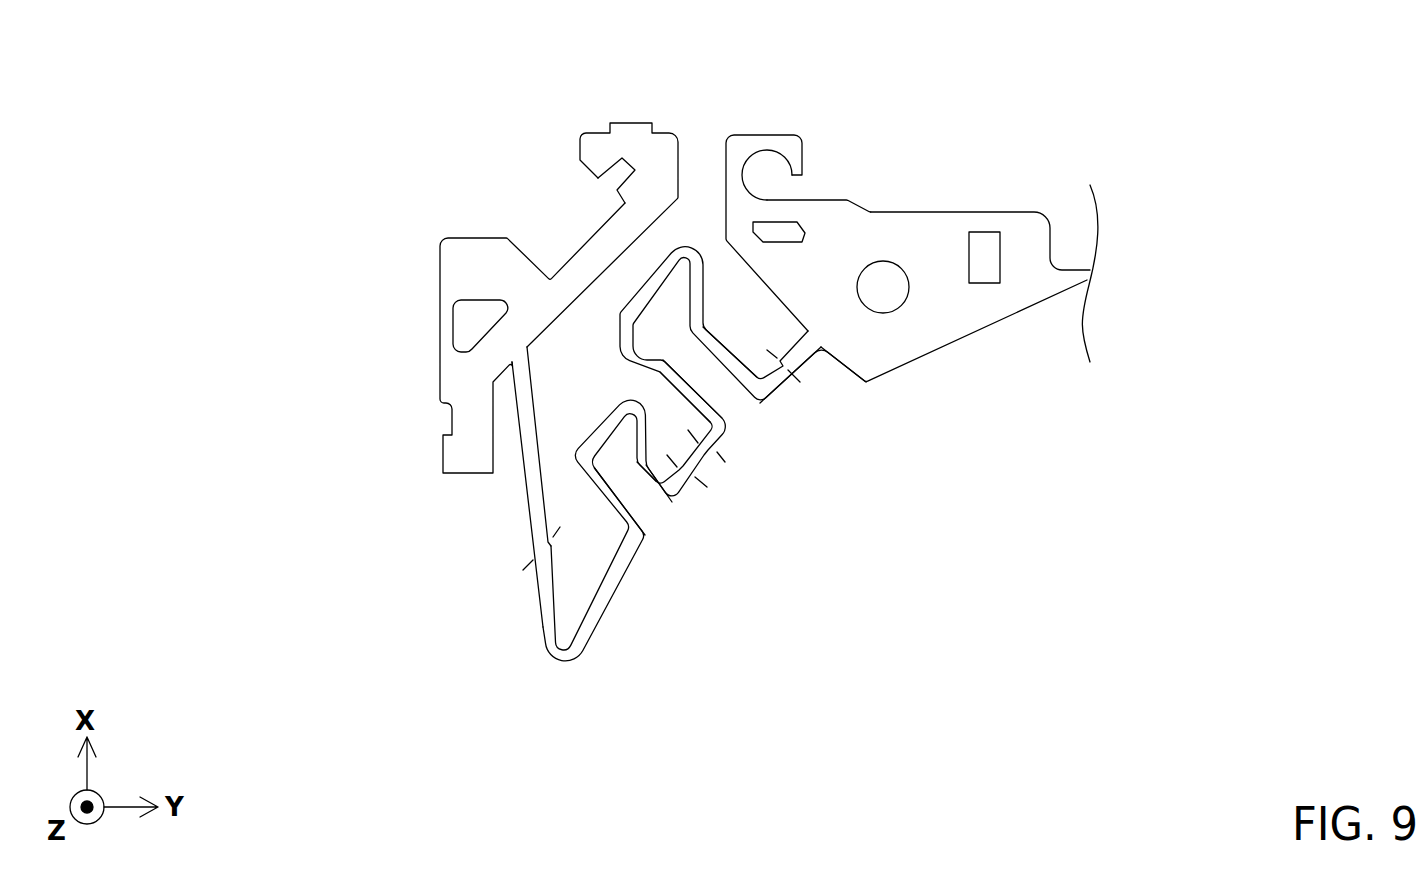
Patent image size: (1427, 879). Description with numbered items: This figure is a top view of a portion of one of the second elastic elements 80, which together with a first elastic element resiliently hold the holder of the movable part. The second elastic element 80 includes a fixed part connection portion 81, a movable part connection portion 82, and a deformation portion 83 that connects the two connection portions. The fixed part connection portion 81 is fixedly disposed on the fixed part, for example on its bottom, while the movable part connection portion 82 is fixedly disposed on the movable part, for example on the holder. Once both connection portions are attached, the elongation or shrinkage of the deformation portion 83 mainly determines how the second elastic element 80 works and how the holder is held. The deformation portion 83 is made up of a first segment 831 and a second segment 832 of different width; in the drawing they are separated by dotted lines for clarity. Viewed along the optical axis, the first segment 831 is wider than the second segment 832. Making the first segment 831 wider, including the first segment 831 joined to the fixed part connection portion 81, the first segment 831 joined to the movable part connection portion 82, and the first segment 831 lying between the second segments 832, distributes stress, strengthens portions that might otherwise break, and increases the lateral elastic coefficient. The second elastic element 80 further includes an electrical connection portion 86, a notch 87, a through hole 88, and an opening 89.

The second elastic element 80 is at (358, 33).
The fixed part connection portion 81 is at (478, 270).
The movable part connection portion 82 is at (943, 313).
The deformation portion 83 is at (190, 305).
The first segment 831 is at (807, 353).
The second segment 832 is at (727, 367).
The electrical connection portion 86 is at (767, 150).
The notch 87 is at (798, 188).
The through hole 88 is at (780, 230).
The opening 89 is at (613, 178).